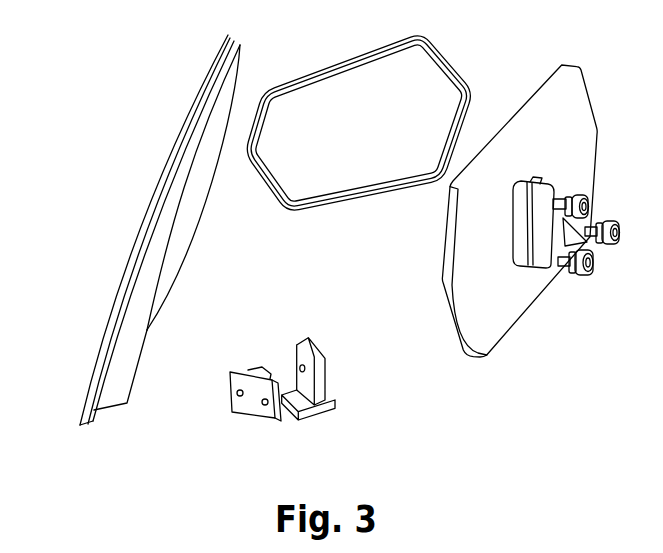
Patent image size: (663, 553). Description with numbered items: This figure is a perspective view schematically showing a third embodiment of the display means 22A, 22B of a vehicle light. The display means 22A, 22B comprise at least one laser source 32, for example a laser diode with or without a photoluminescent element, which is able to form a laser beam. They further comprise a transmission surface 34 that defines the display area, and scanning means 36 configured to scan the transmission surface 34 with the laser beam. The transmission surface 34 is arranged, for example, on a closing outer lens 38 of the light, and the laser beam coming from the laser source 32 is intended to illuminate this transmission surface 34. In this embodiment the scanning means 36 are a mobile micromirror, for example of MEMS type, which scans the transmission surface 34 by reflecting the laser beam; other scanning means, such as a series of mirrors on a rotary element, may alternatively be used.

The display means 22A is at (326, 229).
The display means 22B is at (62, 87).
The transmission surface 34 is at (213, 147).
The closing outer lens 38 is at (144, 217).
The scanning means 36 is at (252, 412).
The laser source 32 is at (317, 380).